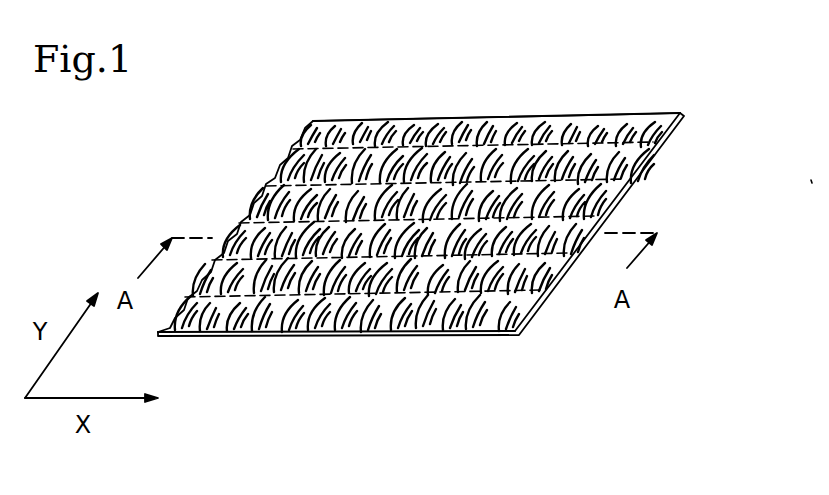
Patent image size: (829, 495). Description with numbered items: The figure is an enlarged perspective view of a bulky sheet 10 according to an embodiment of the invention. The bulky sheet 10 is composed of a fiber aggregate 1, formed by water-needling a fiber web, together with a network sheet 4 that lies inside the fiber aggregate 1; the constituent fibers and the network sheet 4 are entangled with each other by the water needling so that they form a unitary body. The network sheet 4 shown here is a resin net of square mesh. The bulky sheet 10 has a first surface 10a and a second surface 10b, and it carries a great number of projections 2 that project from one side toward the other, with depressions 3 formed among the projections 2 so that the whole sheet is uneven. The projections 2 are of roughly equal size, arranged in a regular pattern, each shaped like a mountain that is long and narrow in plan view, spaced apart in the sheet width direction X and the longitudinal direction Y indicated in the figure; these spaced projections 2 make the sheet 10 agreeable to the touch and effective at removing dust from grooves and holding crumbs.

The bulky sheet 10 is at (585, 97).
The first surface 10a is at (348, 115).
The second surface 10b is at (494, 345).
The fiber aggregate 1 is at (500, 116).
The projections 2 is at (433, 132).
The depressions 3 is at (388, 320).
The network sheet 4 is at (278, 168).